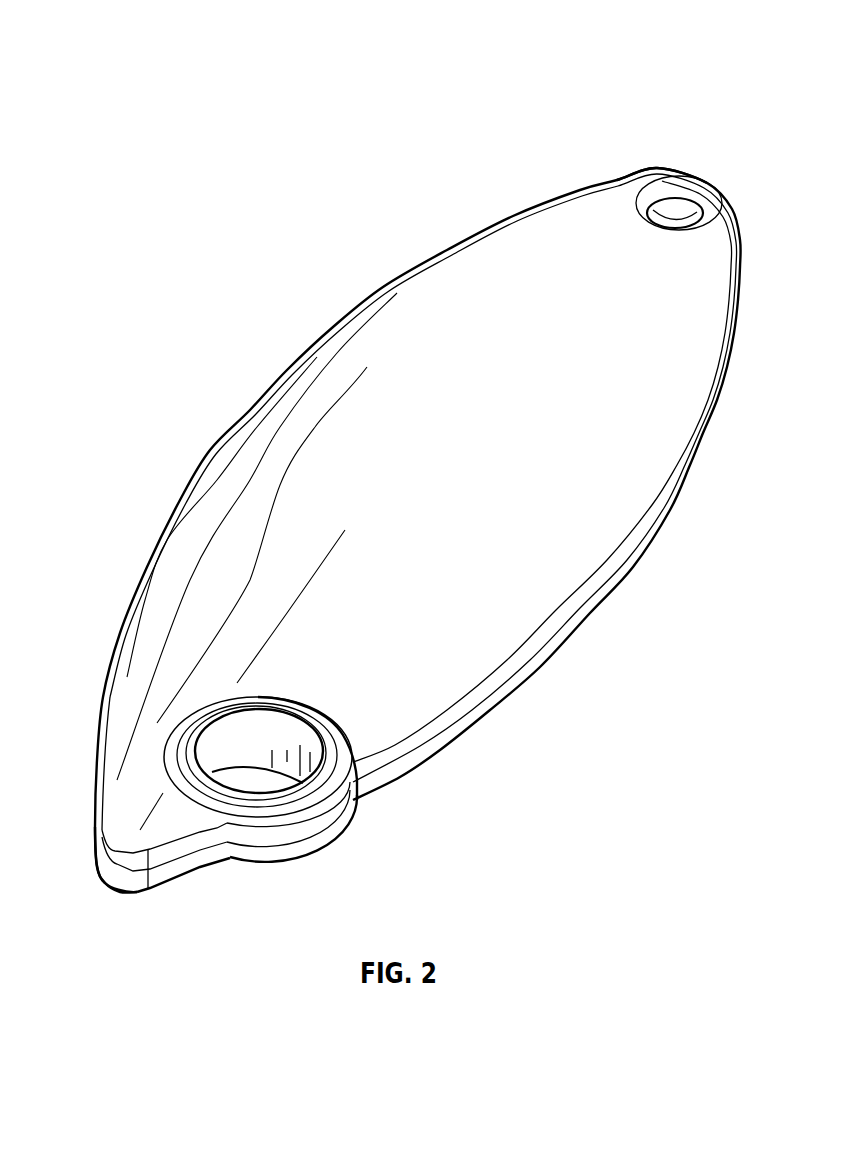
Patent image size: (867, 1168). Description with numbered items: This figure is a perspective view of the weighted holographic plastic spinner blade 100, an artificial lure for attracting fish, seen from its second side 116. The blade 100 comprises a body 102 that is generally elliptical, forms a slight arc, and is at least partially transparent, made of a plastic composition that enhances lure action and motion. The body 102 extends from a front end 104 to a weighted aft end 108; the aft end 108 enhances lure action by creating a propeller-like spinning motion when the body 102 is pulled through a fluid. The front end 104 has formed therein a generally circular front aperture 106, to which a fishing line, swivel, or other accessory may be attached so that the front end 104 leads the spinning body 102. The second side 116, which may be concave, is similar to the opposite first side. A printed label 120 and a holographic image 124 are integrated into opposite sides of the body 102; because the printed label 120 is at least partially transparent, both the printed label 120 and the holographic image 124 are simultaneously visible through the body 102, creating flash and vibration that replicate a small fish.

The weighted holographic plastic spinner blade 100 is at (248, 52).
The body 102 is at (301, 320).
The front end 104 is at (618, 179).
The front aperture 106 is at (686, 212).
The aft end 108 is at (98, 830).
The second side 116 is at (515, 436).
The printed label 120 is at (626, 491).
The holographic image 124 is at (241, 490).